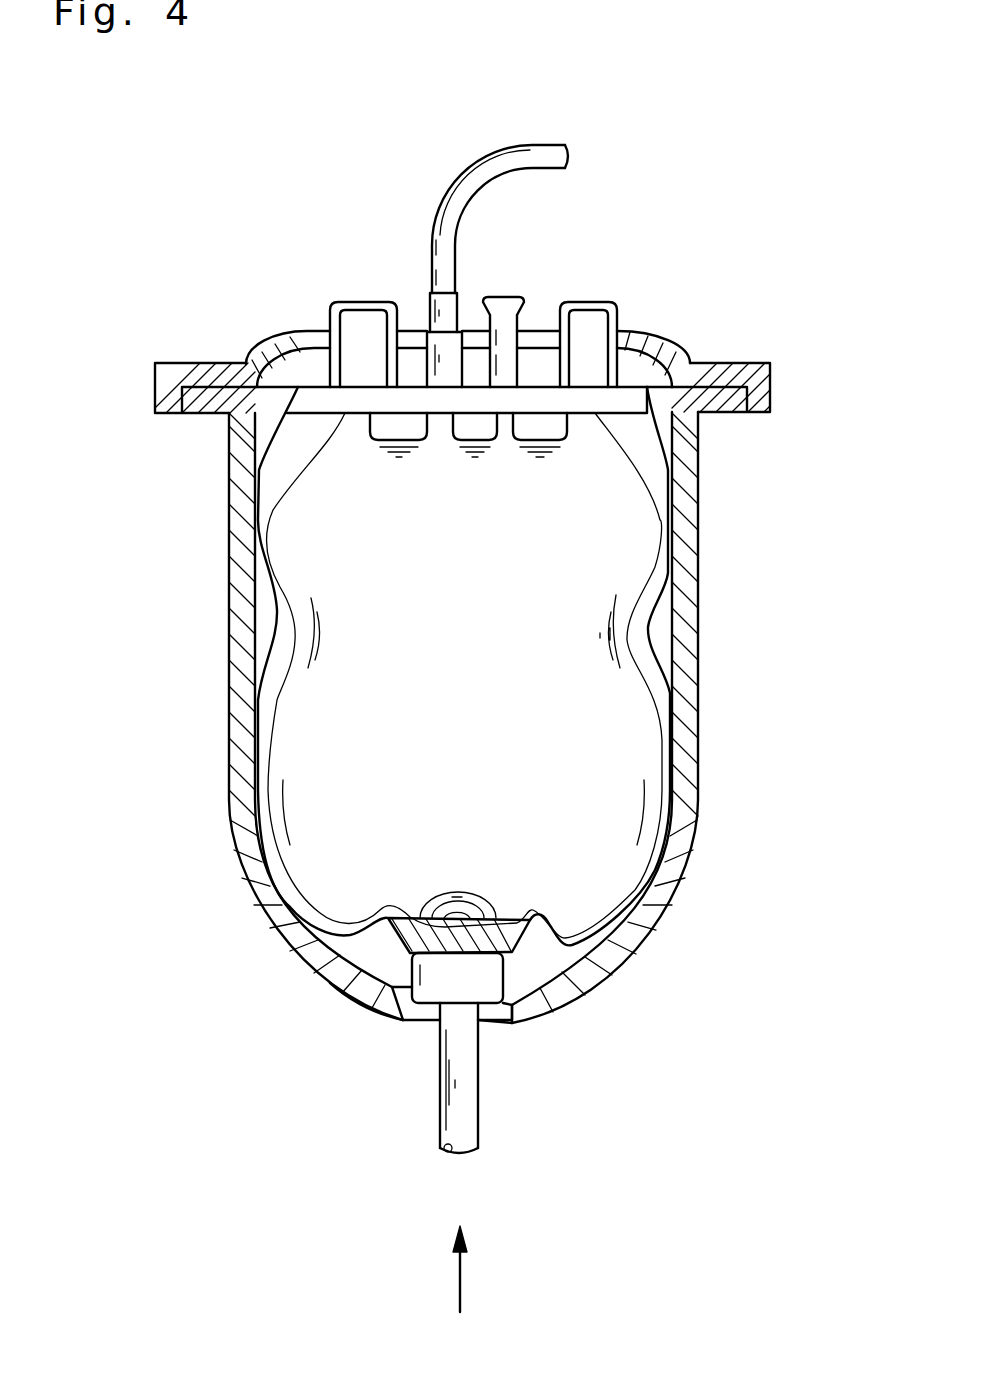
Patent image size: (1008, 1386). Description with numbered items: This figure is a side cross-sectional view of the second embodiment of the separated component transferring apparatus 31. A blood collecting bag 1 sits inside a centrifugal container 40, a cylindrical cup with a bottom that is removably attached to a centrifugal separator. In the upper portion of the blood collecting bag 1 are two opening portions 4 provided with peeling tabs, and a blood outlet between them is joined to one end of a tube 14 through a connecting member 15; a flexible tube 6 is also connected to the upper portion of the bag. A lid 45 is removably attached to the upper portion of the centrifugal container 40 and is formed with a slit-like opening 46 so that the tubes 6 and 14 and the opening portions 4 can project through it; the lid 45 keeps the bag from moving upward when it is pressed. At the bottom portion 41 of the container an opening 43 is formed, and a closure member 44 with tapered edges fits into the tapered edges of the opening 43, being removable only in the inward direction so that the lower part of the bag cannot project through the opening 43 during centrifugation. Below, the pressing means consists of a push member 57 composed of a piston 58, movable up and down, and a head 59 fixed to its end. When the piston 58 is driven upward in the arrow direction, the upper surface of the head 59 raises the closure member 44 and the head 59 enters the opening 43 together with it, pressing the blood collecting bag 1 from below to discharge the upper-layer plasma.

The blood collecting bag 1 is at (372, 675).
The opening portions 4 is at (363, 330).
The flexible tube 6 is at (505, 312).
The tube 14 is at (485, 172).
The connecting member 15 is at (430, 298).
The separated component transferring apparatus 31 is at (800, 148).
The centrifugal container 40 is at (705, 603).
The bottom portion 41 is at (373, 990).
The opening 43 is at (507, 1003).
The closure member 44 is at (440, 940).
The lid 45 is at (277, 343).
The slit-like opening 46 is at (625, 337).
The push member 57 is at (432, 1078).
The piston 58 is at (467, 1103).
The head 59 is at (483, 975).